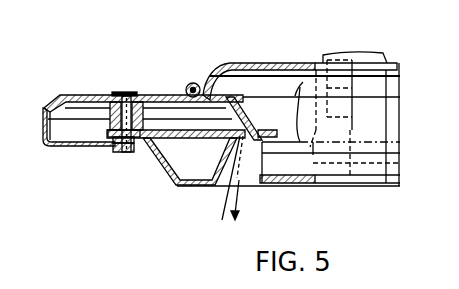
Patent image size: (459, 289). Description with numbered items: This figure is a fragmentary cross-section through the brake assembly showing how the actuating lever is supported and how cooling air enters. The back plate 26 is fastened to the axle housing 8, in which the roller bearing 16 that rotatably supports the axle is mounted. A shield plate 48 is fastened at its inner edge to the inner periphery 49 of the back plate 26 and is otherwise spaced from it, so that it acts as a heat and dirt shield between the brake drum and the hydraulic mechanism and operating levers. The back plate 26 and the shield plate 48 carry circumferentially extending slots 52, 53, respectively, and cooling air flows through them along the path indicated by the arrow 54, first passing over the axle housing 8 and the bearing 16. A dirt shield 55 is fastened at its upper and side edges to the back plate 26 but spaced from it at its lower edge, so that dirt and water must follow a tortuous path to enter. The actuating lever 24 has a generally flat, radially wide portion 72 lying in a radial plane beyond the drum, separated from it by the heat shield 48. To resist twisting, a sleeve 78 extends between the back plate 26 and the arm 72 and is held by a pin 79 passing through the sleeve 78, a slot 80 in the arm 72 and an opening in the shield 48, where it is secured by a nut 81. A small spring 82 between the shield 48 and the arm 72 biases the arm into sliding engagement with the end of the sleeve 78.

The axle housing 8 is at (318, 64).
The roller bearing 16 is at (335, 130).
The actuating lever 24 is at (178, 129).
The back plate 26 is at (72, 94).
The shield plate 48 is at (194, 187).
The inner periphery 49 is at (305, 183).
The slot 52 is at (253, 132).
The slot 53 is at (226, 190).
The arrow 54 is at (298, 92).
The dirt shield 55 is at (262, 66).
The flat portion of lever 72 is at (150, 142).
The sleeve 78 is at (145, 99).
The pin 79 is at (123, 94).
The slot 80 is at (125, 155).
The nut 81 is at (112, 150).
The spring 82 is at (108, 146).